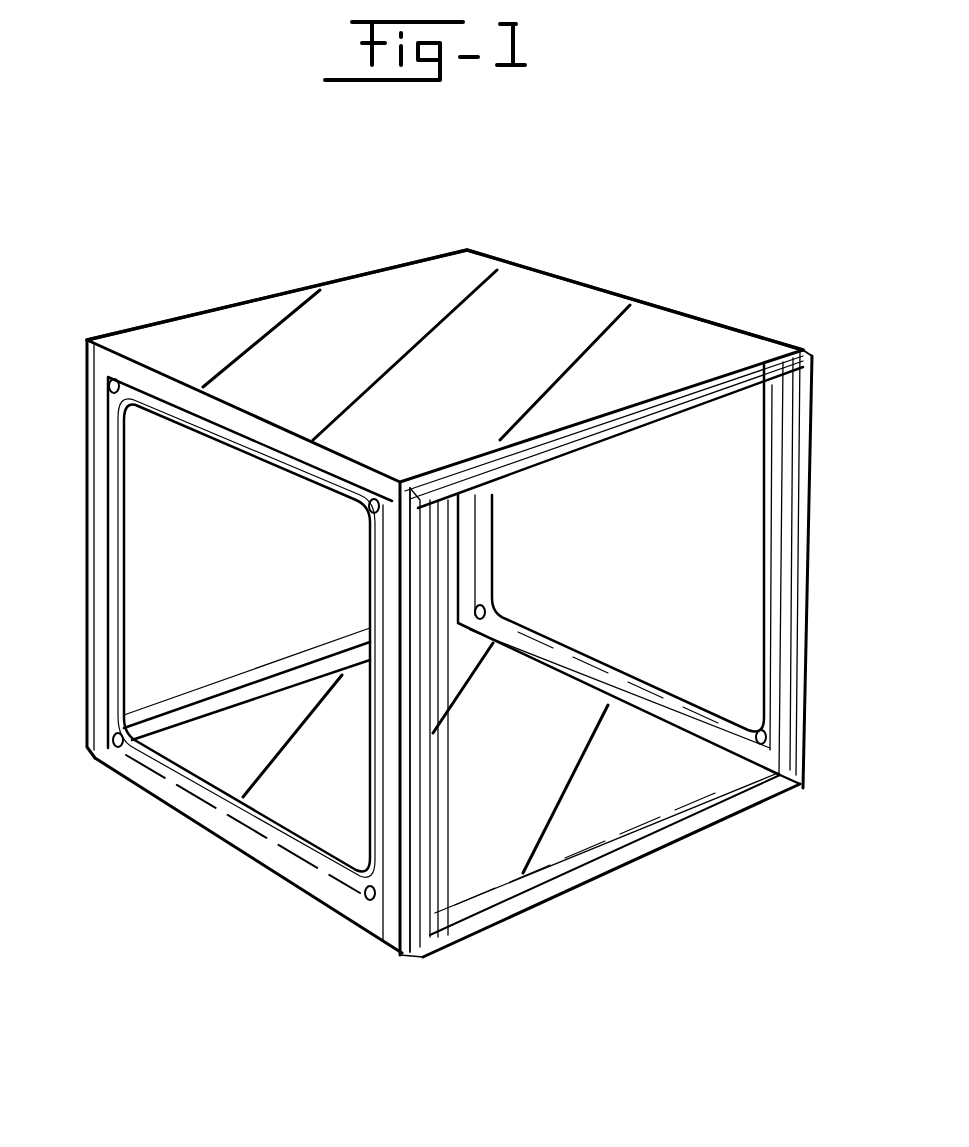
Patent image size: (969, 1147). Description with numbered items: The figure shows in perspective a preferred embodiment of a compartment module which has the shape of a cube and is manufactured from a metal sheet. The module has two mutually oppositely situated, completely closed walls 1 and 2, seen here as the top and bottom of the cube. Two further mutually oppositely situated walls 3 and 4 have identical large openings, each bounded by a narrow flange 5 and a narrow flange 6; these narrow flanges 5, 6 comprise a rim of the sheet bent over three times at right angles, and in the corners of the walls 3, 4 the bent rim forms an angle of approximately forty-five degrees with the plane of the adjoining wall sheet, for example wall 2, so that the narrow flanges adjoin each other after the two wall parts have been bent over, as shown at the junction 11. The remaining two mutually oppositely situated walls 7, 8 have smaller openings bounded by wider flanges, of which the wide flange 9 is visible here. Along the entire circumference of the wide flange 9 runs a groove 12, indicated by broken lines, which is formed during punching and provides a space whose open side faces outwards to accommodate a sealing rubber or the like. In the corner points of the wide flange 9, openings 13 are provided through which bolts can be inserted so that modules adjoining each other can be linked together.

The completely closed wall 1 is at (739, 340).
The completely closed wall 2 is at (702, 772).
The wall having large opening 3 is at (233, 690).
The wall having large opening 4 is at (556, 876).
The narrow flange 5 is at (294, 288).
The narrow flange 6 is at (811, 570).
The wall having smaller opening 7 is at (195, 818).
The wall having smaller opening 8 is at (592, 668).
The wide flange 9 is at (282, 848).
The junction of narrow flanges 11 is at (425, 954).
The groove 12 is at (484, 556).
The opening 13 is at (362, 902).